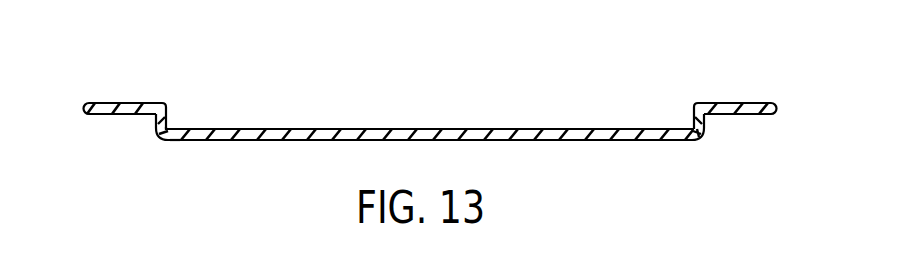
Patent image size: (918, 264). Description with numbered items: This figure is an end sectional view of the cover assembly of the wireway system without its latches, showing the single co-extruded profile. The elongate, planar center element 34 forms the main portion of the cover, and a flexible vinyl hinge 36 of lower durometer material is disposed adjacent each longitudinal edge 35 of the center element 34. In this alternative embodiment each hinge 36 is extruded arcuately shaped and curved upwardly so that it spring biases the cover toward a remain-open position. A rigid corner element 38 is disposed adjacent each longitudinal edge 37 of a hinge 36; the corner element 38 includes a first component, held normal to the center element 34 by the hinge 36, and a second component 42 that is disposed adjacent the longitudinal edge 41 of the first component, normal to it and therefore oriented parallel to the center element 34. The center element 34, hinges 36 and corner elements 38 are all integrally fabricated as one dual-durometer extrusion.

The center element 34 is at (408, 129).
The longitudinal edge 35 is at (174, 141).
The hinge 36 is at (160, 138).
The longitudinal edge 37 is at (168, 122).
The corner element 38 is at (441, 63).
The longitudinal edge 41 is at (163, 103).
The second component 42 is at (770, 103).